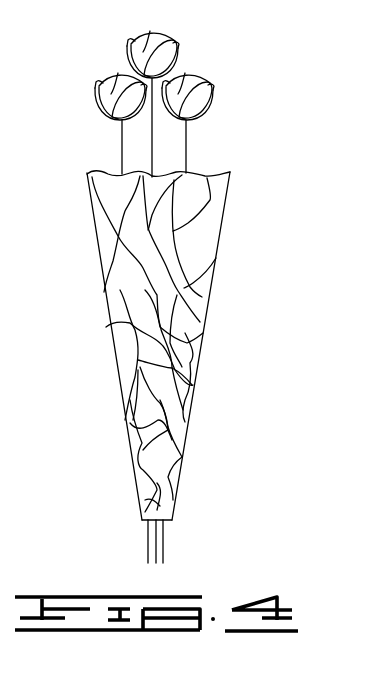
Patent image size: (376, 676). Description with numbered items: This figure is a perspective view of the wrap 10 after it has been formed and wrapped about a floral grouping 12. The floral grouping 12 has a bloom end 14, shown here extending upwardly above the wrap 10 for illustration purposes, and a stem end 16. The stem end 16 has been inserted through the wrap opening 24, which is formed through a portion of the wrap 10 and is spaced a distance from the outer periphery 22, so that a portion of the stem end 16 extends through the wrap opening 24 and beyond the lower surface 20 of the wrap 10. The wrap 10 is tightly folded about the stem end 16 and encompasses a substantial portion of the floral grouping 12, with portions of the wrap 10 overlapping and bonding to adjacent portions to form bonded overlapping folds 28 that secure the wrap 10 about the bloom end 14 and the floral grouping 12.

The wrap 10 is at (160, 350).
The floral grouping 12 is at (201, 129).
The bloom end 14 is at (118, 131).
The stem end 16 is at (164, 535).
The lower surface 20 is at (202, 297).
The outer periphery 22 is at (202, 173).
The wrap opening 24 is at (147, 524).
The overlapping folds 28 is at (107, 325).